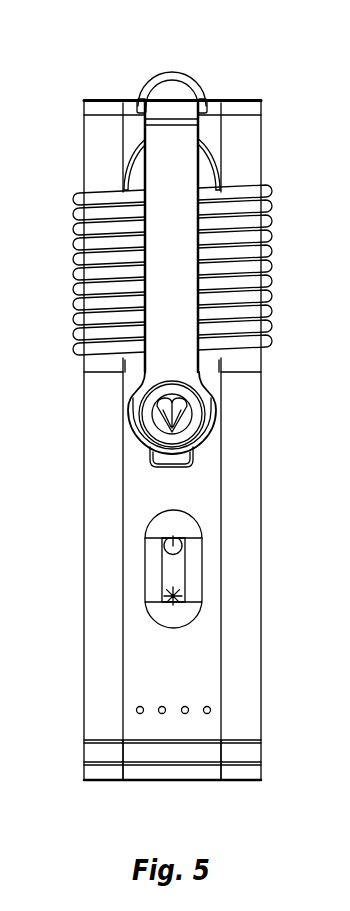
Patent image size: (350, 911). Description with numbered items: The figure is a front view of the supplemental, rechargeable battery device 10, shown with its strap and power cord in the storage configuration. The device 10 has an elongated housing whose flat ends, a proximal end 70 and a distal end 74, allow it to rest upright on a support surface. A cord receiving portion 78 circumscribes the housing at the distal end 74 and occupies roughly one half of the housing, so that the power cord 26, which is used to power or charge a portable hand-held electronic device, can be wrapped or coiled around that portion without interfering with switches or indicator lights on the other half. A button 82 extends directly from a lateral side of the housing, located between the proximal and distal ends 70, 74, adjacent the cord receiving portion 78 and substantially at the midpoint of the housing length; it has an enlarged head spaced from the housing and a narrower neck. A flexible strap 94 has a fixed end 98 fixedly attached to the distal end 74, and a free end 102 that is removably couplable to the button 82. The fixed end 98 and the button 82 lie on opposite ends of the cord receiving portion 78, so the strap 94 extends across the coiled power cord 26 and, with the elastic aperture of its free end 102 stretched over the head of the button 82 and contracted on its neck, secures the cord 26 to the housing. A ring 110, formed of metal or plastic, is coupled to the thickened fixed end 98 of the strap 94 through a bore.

The supplemental, rechargeable battery device 10 is at (168, 439).
The distal end 74 is at (98, 99).
The ring 110 is at (178, 76).
The fixed end 98 is at (188, 133).
The flexible strap 94 is at (168, 163).
The power cord 26 is at (72, 242).
The cord receiving portion 78 is at (248, 358).
The free end 102 is at (157, 373).
The button 82 is at (200, 410).
The proximal end 70 is at (260, 772).